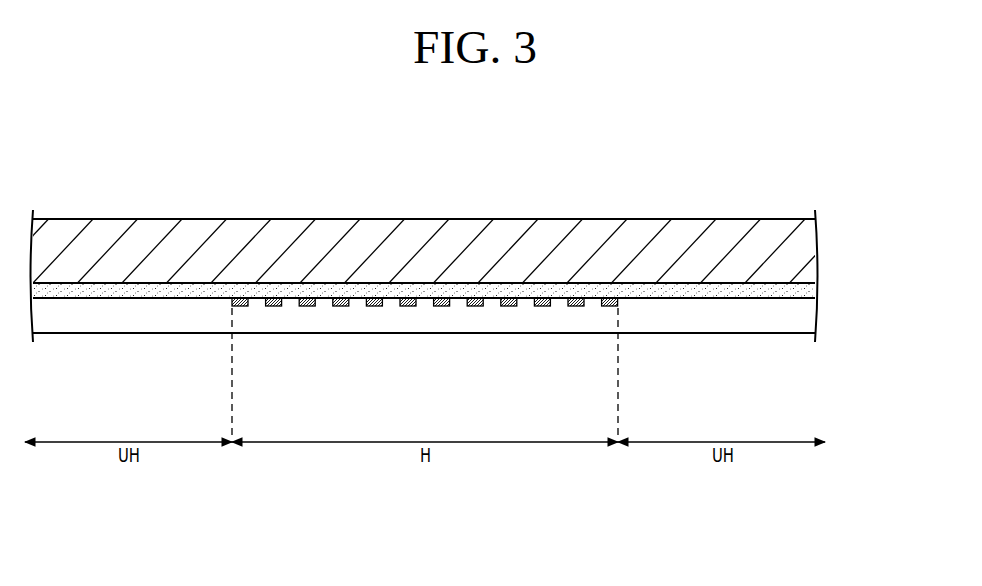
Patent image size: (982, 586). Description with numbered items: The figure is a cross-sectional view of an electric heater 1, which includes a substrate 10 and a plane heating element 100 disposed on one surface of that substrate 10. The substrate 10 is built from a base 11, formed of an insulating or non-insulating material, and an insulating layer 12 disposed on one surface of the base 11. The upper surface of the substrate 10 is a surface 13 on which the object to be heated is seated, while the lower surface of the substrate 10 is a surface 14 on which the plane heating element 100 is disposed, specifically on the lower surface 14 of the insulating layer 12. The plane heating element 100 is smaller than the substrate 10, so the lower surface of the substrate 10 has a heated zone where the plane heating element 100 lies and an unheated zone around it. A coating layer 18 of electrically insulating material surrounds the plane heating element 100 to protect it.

The electric heater 1 is at (798, 187).
The substrate 10 is at (868, 245).
The base 11 is at (807, 253).
The insulating layer 12 is at (807, 290).
The surface 13 is at (200, 218).
The surface 14 is at (143, 297).
The coating layer 18 is at (807, 315).
The plane heating element 100 is at (618, 310).